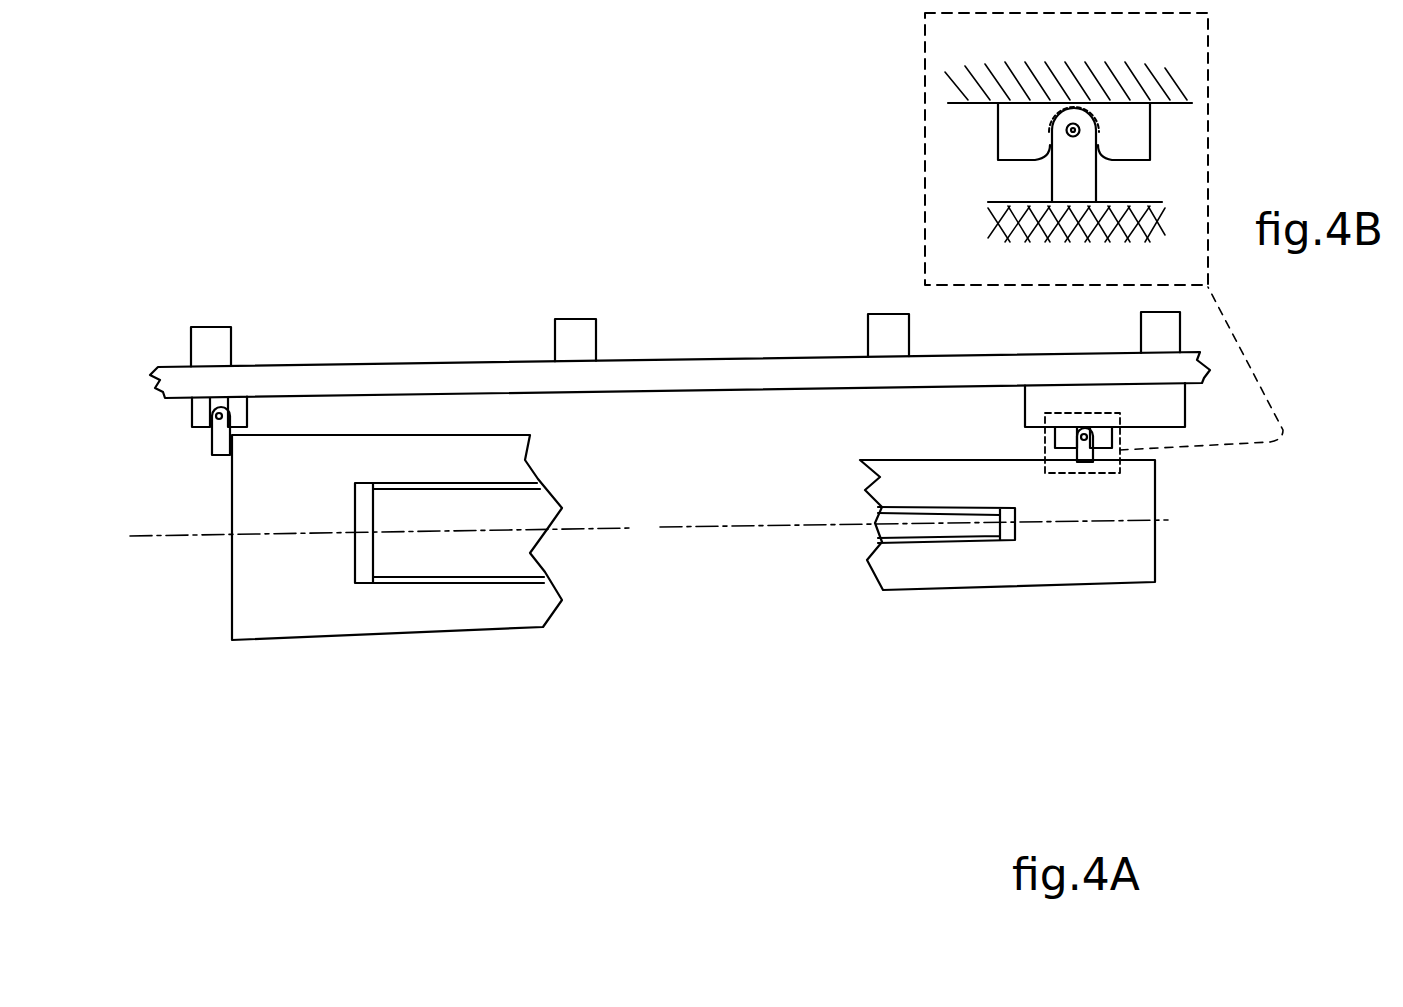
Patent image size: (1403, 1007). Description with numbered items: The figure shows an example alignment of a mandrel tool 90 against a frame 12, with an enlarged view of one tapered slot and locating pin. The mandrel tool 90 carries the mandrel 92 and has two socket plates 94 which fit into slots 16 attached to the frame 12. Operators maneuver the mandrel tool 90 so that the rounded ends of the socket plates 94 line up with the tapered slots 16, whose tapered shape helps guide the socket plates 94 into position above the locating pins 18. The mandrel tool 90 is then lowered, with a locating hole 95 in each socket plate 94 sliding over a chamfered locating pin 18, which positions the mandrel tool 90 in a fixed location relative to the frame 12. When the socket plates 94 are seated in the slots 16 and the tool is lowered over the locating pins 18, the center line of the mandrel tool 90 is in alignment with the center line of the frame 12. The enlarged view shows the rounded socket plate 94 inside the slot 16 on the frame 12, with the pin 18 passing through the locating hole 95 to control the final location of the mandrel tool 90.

In FIG. 4A, the frame 12 is at (402, 360).
In FIG. 4B, the frame 12 is at (1020, 62).
In FIG. 4A, the slot 16 is at (187, 417).
In FIG. 4B, the slot 16 is at (1153, 133).
In FIG. 4A, the locating pin 18 is at (218, 412).
In FIG. 4B, the locating pin 18 is at (1050, 128).
In FIG. 4A, the mandrel tool 90 is at (660, 641).
In FIG. 4B, the mandrel tool 90 is at (985, 218).
In FIG. 4A, the mandrel 92 is at (543, 557).
In FIG. 4A, the socket plate 94 is at (212, 455).
In FIG. 4B, the socket plate 94 is at (1100, 178).
In FIG. 4B, the locating hole 95 is at (1062, 157).